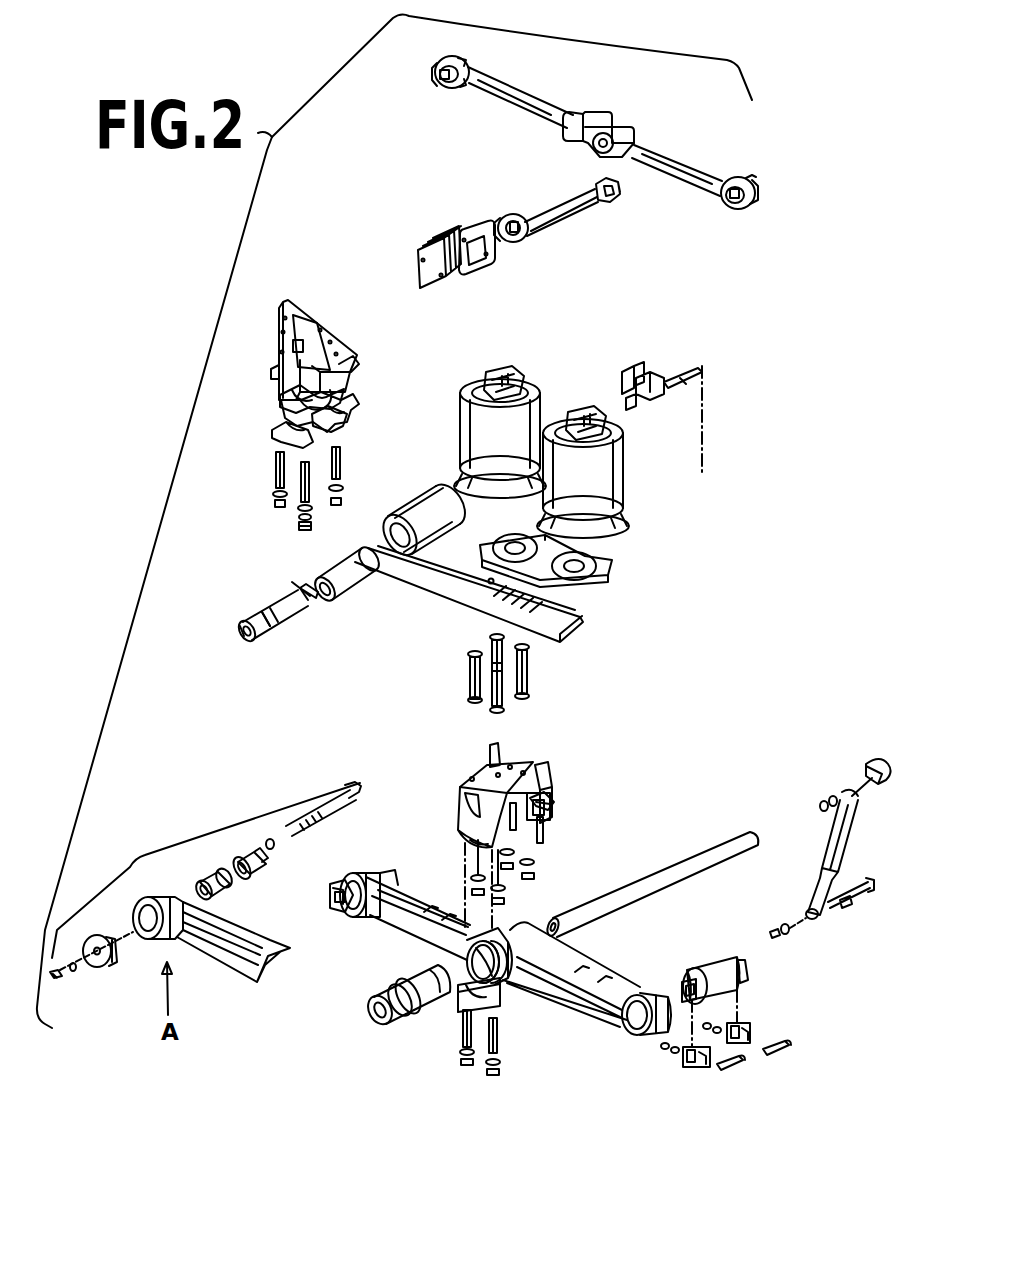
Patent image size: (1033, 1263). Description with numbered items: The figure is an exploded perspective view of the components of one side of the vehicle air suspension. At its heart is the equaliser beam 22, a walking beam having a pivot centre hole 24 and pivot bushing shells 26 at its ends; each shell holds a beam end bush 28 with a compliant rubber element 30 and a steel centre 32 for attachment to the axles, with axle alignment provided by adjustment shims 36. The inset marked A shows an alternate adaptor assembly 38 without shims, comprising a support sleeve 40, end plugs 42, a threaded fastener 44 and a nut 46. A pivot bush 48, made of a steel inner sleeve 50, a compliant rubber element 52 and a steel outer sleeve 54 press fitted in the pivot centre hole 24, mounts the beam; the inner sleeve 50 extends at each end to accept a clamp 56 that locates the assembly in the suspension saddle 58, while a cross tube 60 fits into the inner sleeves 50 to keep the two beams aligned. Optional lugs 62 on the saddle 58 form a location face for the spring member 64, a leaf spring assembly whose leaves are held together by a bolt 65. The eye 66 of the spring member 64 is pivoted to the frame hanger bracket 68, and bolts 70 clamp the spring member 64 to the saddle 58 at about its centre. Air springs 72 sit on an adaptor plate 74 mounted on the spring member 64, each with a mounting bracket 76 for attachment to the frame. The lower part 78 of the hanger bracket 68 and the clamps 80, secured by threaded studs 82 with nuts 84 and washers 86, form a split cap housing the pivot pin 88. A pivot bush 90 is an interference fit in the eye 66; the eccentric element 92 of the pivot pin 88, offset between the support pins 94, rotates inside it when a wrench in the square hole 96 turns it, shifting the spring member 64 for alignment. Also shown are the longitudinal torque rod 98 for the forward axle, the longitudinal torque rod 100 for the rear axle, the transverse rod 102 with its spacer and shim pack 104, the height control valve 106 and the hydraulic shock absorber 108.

The equaliser beam 22 is at (253, 958).
The pivot centre hole 24 is at (527, 910).
The pivot bushing shell 26 is at (372, 880).
The beam end bush 28 is at (360, 927).
The compliant rubber element 30 is at (343, 880).
The steel centre 32 is at (745, 970).
The adjustment shims 36 is at (336, 900).
The adaptor assembly 38 is at (206, 870).
The support sleeve 40 is at (212, 872).
The end plugs 42 is at (250, 850).
The threaded fastener 44 is at (322, 800).
The nut 46 is at (58, 979).
The pivot bush 48 is at (367, 1020).
The steel inner sleeve 50 is at (395, 1022).
The compliant rubber element 52 is at (414, 1010).
The steel outer sleeve 54 is at (422, 978).
The clamp 56 is at (500, 1006).
The suspension saddle 58 is at (548, 812).
The cross tube 60 is at (692, 862).
The lugs 62 is at (545, 770).
The spring member 64 is at (582, 624).
The bolt 65 is at (488, 584).
The eye 66 is at (443, 492).
The frame hanger bracket 68 is at (304, 300).
The bolts 70 is at (470, 674).
The air springs 72 is at (472, 430).
The adaptor plate 74 is at (608, 577).
The mounting bracket 76 is at (578, 415).
The lower part 78 is at (280, 400).
The clamps 80 is at (272, 432).
The threaded studs 82 is at (276, 463).
The nuts 84 is at (299, 520).
The washers 86 is at (276, 494).
The pivot pin 88 is at (302, 567).
The pivot bush 90 is at (368, 578).
The eccentric element 92 is at (290, 616).
The support pins 94 is at (318, 598).
The square hole 96 is at (240, 632).
The longitudinal torque rod 98 is at (505, 97).
The longitudinal torque rod 100 is at (678, 172).
The transverse rod 102 is at (535, 215).
The spacer and shim pack 104 is at (470, 276).
The height control valve 106 is at (660, 362).
The hydraulic shock absorber 108 is at (836, 845).